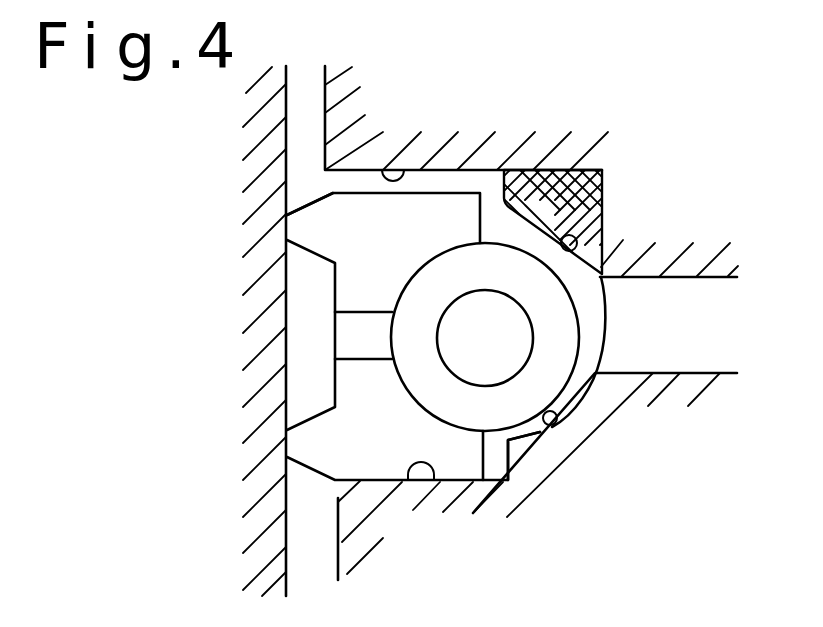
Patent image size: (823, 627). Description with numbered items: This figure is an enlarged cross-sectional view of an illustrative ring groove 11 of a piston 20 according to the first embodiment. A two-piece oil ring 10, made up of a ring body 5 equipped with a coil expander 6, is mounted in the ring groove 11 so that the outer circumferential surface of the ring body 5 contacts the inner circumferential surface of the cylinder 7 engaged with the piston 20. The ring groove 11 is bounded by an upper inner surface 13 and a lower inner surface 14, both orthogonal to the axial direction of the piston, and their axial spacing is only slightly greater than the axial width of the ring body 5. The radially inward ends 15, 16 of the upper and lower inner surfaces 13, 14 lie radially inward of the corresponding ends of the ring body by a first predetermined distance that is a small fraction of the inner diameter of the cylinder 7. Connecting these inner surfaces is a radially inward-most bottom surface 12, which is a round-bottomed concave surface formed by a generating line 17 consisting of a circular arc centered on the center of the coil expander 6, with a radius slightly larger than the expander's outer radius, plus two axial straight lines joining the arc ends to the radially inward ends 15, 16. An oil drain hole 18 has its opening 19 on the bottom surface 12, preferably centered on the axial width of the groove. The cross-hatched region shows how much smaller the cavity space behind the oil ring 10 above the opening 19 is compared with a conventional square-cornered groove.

The ring body 5 is at (448, 217).
The coil expander 6 is at (603, 240).
The cylinder 7 is at (232, 324).
The two-piece oil ring 10 is at (325, 378).
The ring groove 11 is at (343, 175).
The bottom surface 12 is at (547, 292).
The upper inner surface 13 is at (398, 168).
The lower inner surface 14 is at (413, 482).
The radially inward end of the upper inner surface 15 is at (503, 168).
The radially inward end of the lower inner surface 16 is at (508, 482).
The generating line 17 is at (550, 426).
The oil drain hole 18 is at (697, 278).
The opening 19 is at (603, 308).
The piston 20 is at (638, 532).